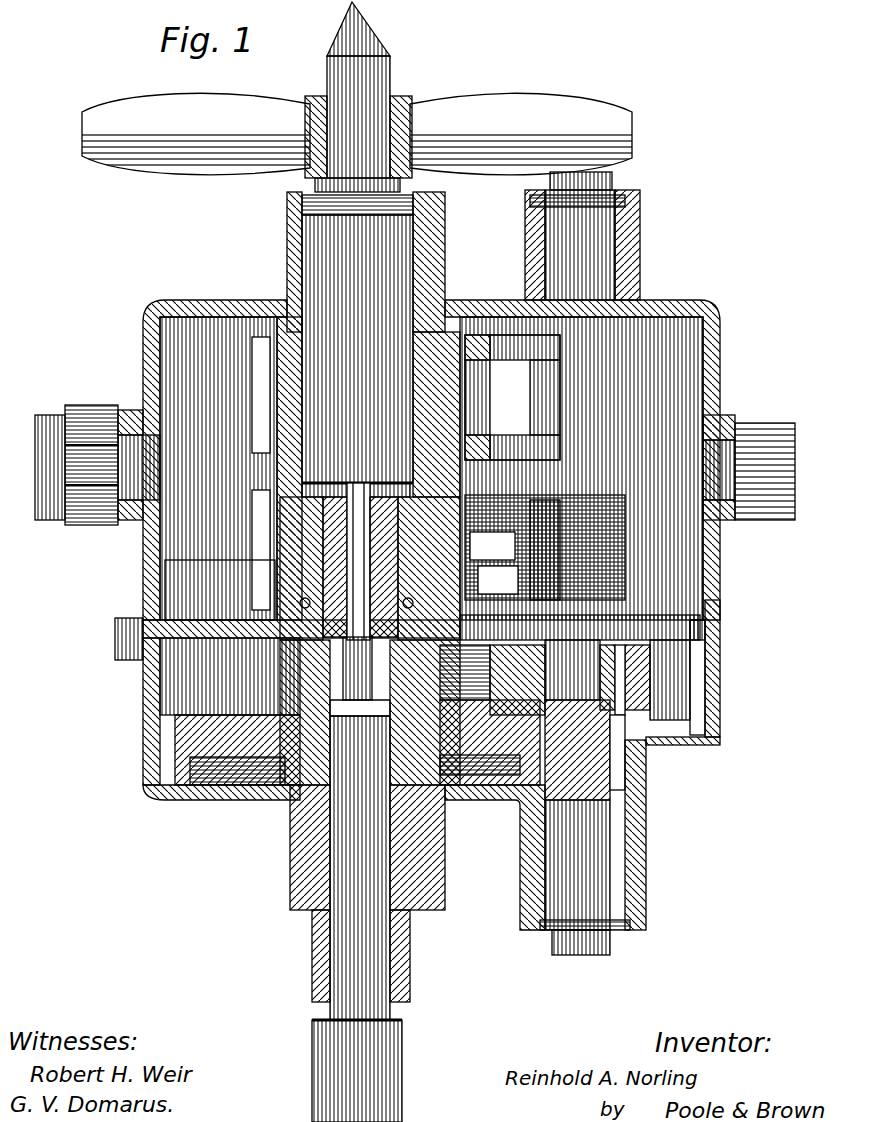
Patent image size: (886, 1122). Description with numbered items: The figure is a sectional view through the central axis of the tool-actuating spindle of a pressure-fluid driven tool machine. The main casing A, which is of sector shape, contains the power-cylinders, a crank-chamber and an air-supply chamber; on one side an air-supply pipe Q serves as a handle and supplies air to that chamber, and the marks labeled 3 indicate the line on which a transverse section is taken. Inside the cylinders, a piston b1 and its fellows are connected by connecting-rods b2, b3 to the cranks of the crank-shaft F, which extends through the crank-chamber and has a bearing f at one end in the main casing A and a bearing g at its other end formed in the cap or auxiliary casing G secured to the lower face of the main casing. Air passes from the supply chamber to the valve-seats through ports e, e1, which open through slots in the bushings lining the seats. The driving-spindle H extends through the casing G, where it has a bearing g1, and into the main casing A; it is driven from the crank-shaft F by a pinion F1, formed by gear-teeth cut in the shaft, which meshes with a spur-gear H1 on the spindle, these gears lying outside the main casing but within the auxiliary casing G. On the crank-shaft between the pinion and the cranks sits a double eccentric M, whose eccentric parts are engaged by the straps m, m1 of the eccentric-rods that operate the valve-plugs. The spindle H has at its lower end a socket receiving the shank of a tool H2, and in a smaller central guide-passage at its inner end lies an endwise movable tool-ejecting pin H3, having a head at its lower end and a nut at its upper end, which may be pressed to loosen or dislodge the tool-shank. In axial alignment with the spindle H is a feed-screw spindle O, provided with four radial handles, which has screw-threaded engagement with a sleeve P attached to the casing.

The feed-screw spindle O is at (368, 92).
The sleeve P is at (315, 187).
The bearing f is at (605, 272).
The main casing A is at (150, 335).
The port e is at (262, 382).
The air-supply pipe Q is at (42, 428).
The section line 3 is at (140, 545).
The port e1 is at (265, 537).
The tool-ejecting pin H3 is at (268, 573).
The connecting-rod b2 is at (512, 397).
The connecting-rod b3 is at (545, 547).
The piston b1 is at (498, 580).
The strap m1 is at (655, 652).
The double eccentric M is at (640, 668).
The strap m is at (645, 692).
The pinion F1 is at (613, 752).
The crank-shaft F is at (600, 825).
The bearing g is at (628, 888).
The auxiliary casing G is at (482, 795).
The spur-gear H1 is at (222, 760).
The driving-spindle H is at (312, 826).
The bearing g1 is at (300, 853).
The tool H2 is at (372, 1052).